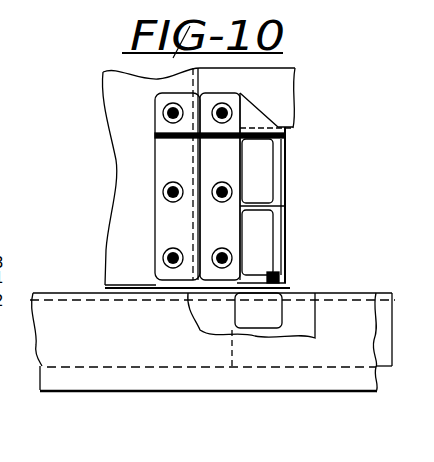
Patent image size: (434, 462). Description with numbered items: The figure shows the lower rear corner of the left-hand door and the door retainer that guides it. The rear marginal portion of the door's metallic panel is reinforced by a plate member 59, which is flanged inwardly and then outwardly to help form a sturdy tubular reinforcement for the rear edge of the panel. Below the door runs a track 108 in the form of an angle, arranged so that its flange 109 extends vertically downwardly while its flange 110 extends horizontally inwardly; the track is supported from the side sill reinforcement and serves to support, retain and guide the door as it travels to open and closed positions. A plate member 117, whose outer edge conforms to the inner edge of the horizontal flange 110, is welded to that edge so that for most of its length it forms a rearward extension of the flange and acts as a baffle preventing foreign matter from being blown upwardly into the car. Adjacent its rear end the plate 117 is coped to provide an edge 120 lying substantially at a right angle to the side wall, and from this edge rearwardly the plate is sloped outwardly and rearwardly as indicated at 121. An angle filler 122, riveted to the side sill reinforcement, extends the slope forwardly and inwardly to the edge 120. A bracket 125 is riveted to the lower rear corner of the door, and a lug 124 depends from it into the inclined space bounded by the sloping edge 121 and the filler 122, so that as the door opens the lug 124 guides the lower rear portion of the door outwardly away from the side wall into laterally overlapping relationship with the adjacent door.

The plate member 59 is at (125, 178).
The track 108 is at (58, 382).
The flange 109 is at (98, 391).
The flange 110 is at (78, 299).
The plate member 117 is at (39, 292).
The edge 120 is at (230, 296).
The sloped portion 121 is at (312, 302).
The angle filler 122 is at (383, 292).
The lug 124 is at (272, 317).
The bracket 125 is at (260, 181).